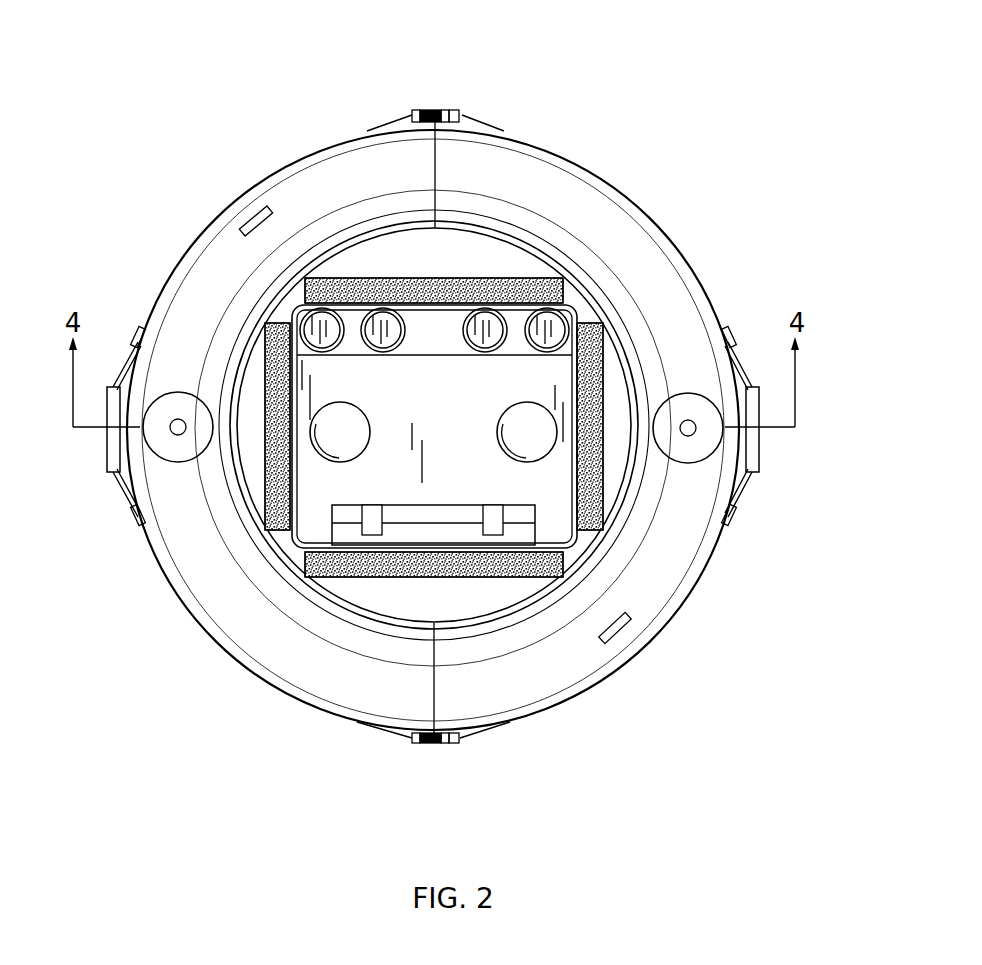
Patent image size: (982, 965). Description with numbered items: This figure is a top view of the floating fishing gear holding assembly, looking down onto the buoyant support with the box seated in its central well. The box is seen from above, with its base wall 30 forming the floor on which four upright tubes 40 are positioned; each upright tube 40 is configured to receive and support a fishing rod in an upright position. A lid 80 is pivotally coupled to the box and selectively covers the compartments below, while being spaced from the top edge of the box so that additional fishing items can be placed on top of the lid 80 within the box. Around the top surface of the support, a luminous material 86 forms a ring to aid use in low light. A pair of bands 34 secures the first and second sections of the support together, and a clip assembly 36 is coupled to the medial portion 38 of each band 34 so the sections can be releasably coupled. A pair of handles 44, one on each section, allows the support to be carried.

The base wall 30 is at (561, 372).
The bands 34 is at (462, 120).
The clip assemblies 36 is at (445, 112).
The medial portion 38 is at (414, 93).
The upright tube 40 is at (313, 330).
The handles 44 is at (116, 388).
The lid 80 is at (508, 488).
The luminous material 86 is at (557, 255).